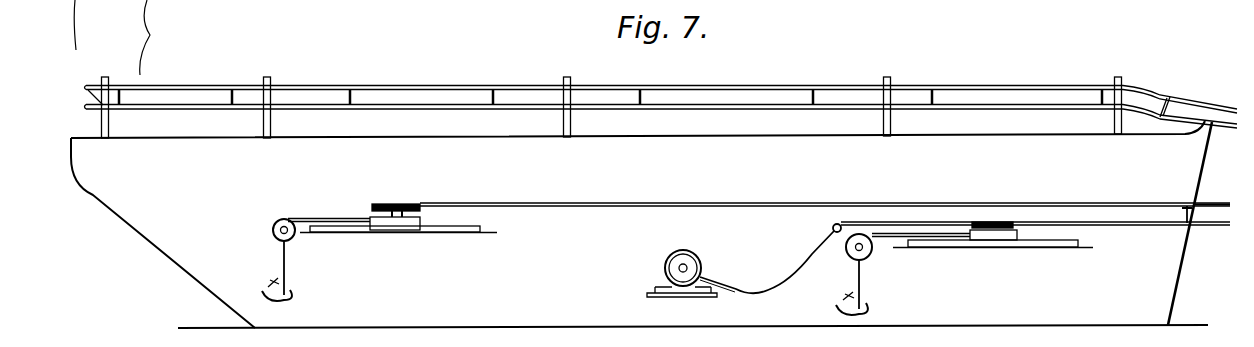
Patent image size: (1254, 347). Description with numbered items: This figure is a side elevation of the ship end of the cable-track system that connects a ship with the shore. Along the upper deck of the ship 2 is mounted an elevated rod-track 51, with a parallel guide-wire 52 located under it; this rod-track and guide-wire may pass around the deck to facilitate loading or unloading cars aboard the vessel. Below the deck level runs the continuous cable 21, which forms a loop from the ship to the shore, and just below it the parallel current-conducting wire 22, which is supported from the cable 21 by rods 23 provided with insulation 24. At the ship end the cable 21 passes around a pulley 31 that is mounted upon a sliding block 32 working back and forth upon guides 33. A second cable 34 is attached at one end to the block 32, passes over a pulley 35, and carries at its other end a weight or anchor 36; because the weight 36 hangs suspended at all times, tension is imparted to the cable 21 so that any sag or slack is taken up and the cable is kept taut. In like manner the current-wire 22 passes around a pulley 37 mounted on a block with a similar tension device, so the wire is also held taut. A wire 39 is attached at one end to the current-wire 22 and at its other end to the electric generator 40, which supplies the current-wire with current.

The ship 2 is at (641, 224).
The cable 21 is at (732, 198).
The current-conducting wire 22 is at (1120, 227).
The rods 23 is at (1180, 214).
The insulation 24 is at (1203, 204).
The pulley 31 is at (415, 205).
The sliding block 32 is at (425, 226).
The guides 33 is at (348, 229).
The cable 34 is at (302, 218).
The pulley 35 is at (272, 230).
The weight or anchor 36 is at (289, 271).
The pulley 37 is at (1010, 228).
The wire 39 is at (1031, 258).
The electric generator 40 is at (676, 254).
The elevated rod-track 51 is at (606, 86).
The guide-wire 52 is at (596, 109).